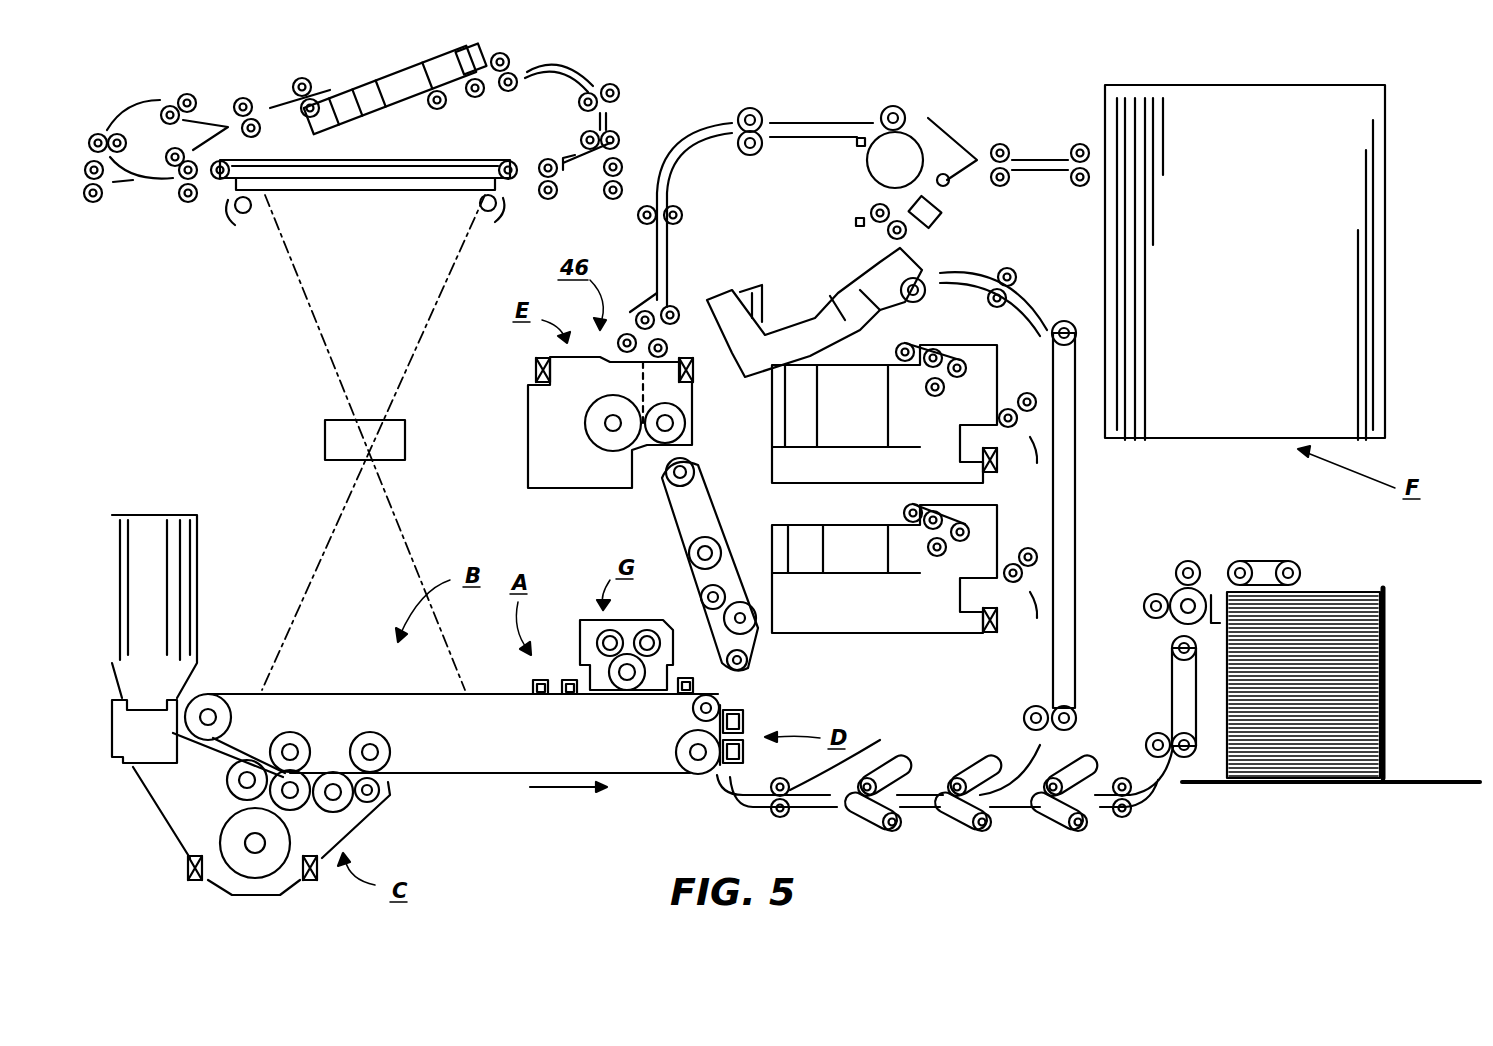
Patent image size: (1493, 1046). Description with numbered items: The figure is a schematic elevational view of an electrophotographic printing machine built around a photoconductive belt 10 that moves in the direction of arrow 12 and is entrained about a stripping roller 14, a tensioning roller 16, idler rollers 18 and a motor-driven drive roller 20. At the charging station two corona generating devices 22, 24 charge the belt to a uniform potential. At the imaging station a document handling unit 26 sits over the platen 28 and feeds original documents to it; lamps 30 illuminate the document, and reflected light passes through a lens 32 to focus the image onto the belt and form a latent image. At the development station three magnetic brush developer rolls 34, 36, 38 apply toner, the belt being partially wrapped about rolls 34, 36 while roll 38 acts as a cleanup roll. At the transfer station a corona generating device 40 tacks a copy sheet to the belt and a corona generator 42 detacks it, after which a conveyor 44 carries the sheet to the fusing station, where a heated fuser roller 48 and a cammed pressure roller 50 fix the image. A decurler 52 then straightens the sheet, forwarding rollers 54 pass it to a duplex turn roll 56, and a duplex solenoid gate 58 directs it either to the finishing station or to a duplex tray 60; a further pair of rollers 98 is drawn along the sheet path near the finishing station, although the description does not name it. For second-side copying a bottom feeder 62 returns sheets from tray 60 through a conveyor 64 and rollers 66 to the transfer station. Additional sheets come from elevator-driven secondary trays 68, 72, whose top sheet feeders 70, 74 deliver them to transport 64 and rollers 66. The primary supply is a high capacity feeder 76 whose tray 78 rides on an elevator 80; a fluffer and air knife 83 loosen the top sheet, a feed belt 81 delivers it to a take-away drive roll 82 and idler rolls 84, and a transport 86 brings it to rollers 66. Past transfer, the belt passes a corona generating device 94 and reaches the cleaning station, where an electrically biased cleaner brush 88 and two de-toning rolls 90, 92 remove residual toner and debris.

The photoconductive belt 10 is at (420, 775).
The arrow 12 is at (555, 790).
The stripping roller 14 is at (692, 710).
The tensioning roller 16 is at (208, 694).
The idler rollers 18 is at (372, 740).
The drive roller 20 is at (690, 765).
The corona generating device 22 is at (555, 678).
The corona generating device 24 is at (530, 682).
The document handling unit 26 is at (597, 40).
The platen 28 is at (330, 180).
The lamps 30 is at (240, 215).
The lens 32 is at (405, 440).
The magnetic brush developer roll 34 is at (245, 785).
The magnetic brush developer roll 36 is at (290, 805).
The developer roll 38 is at (335, 805).
The corona generating device 40 is at (750, 760).
The corona generator 42 is at (745, 705).
The conveyor 44 is at (670, 525).
The heated fuser roller 48 is at (598, 440).
The pressure roller 50 is at (680, 420).
The decurler 52 is at (660, 300).
The forwarding rollers 54 is at (650, 185).
The duplex turn roll 56 is at (880, 170).
The duplex solenoid gate 58 is at (945, 150).
The duplex tray 60 is at (790, 300).
The bottom feeder 62 is at (900, 350).
The conveyor 64 is at (1078, 538).
The rollers 66 is at (876, 775).
The secondary tray 68 is at (830, 465).
The top sheet feeder 70 is at (968, 382).
The secondary tray 72 is at (835, 595).
The top sheet feeder 74 is at (945, 518).
The high capacity feeder 76 is at (1437, 645).
The tray 78 is at (1340, 785).
The elevator 80 is at (1450, 787).
The feed belt 81 is at (1290, 560).
The take-away drive roll 82 is at (1170, 598).
The fluffer and air knife 83 is at (1245, 565).
The idler rolls 84 is at (1195, 565).
The transport 86 is at (1170, 695).
The cleaner brush 88 is at (612, 700).
The de-toning roll 90 is at (600, 638).
The de-toning roll 92 is at (650, 638).
The corona generating device 94 is at (700, 690).
The rollers 98 is at (1080, 143).